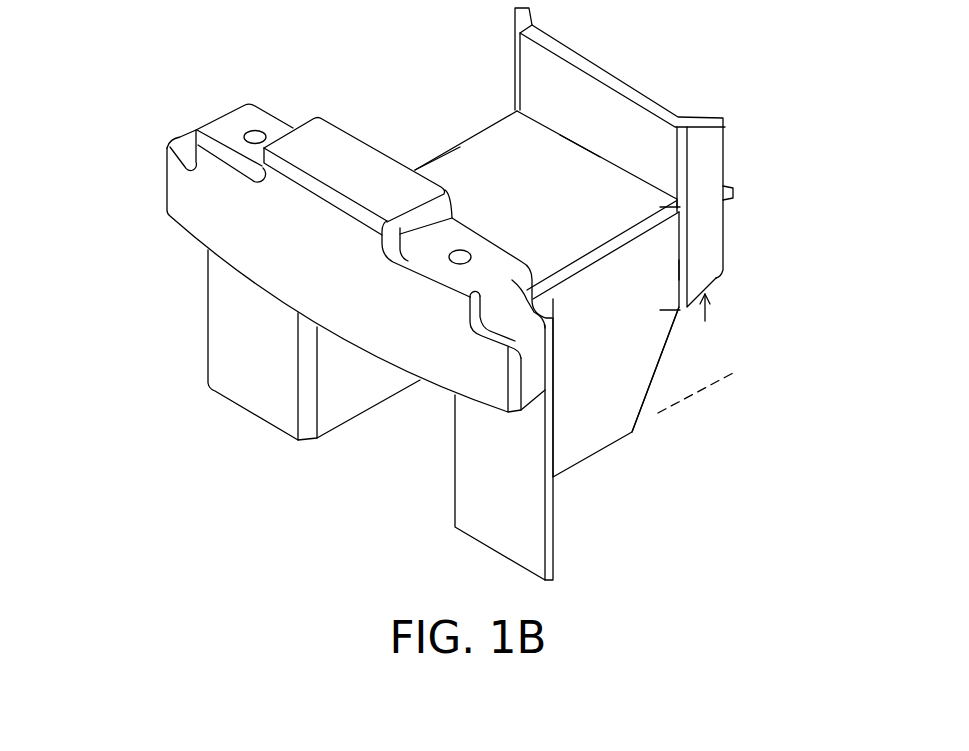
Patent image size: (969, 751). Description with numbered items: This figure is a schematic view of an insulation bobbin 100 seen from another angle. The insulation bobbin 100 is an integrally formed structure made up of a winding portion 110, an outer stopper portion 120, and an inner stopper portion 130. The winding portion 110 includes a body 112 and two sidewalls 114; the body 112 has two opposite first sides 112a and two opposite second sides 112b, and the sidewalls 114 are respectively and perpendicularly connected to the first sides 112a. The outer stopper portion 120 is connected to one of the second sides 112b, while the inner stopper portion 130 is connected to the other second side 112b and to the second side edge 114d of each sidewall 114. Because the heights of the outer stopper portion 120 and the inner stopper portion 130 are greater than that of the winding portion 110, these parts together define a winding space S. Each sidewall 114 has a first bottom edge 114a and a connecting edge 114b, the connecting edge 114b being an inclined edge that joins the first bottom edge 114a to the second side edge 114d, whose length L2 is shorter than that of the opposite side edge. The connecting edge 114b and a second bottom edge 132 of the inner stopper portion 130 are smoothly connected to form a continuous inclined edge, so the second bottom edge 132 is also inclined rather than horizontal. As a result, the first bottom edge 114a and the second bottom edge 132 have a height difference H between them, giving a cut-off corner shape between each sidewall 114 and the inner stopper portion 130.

The insulation bobbin 100 is at (469, 294).
The winding portion 110 is at (611, 328).
The body 112 is at (580, 288).
The first side 112a is at (459, 146).
The second side 112b is at (587, 153).
The sidewall 114 is at (680, 344).
The first bottom edge 114a is at (568, 470).
The connecting edge 114b is at (659, 369).
The second side edge 114d is at (676, 270).
The outer stopper portion 120 is at (188, 198).
The inner stopper portion 130 is at (670, 157).
The second bottom edge 132 is at (721, 282).
The winding space S is at (493, 82).
The length of the second side edge L2 is at (668, 208).
The height difference H is at (705, 387).